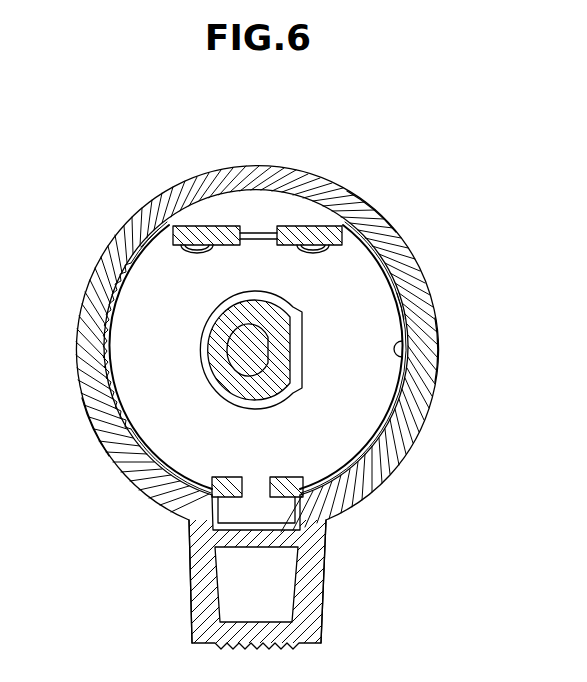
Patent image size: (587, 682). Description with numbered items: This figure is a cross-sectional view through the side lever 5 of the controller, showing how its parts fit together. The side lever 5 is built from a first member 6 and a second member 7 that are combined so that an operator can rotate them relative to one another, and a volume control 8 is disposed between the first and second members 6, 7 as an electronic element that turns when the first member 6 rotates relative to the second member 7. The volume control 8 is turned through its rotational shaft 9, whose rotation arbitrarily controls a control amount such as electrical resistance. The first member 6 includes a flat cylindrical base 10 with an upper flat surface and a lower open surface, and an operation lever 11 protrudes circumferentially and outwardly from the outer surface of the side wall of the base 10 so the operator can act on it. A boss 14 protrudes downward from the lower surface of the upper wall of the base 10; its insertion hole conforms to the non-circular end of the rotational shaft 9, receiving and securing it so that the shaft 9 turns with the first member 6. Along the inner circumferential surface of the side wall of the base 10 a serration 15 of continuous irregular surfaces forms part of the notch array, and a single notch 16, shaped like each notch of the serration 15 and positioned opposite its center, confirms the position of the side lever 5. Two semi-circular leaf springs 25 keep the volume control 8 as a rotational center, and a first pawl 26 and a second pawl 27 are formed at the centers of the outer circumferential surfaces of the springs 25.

The side lever 5 is at (384, 153).
The first member 6 is at (417, 437).
The second member 7 is at (362, 465).
The volume control 8 is at (186, 273).
The rotational shaft 9 is at (243, 350).
The flat cylindrical base 10 is at (393, 223).
The operation lever 11 is at (320, 627).
The boss 14 is at (238, 373).
The serration 15 is at (85, 428).
The notch 16 is at (412, 345).
The semi-circular leaf spring 25 is at (118, 256).
The first pawl 26 is at (101, 338).
The second pawl 27 is at (403, 358).